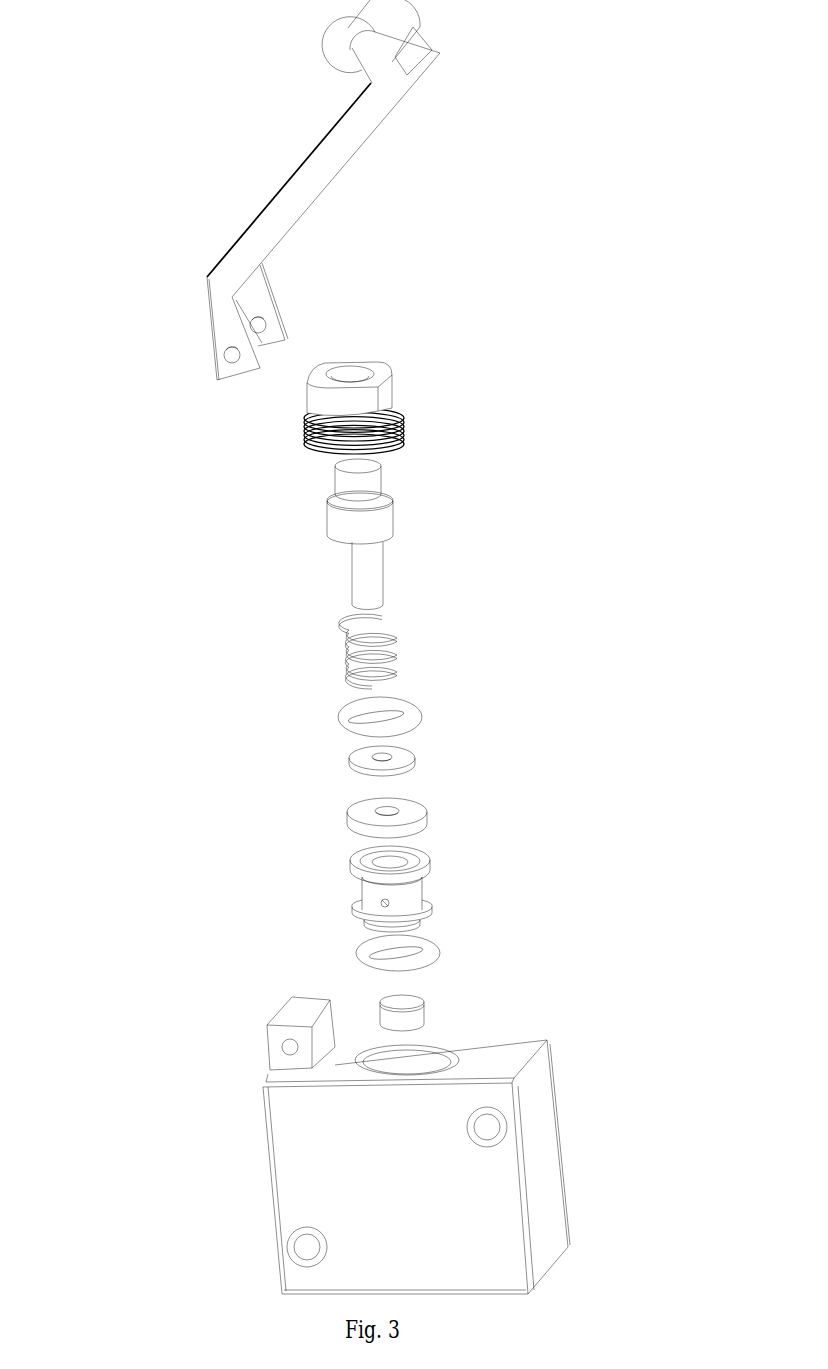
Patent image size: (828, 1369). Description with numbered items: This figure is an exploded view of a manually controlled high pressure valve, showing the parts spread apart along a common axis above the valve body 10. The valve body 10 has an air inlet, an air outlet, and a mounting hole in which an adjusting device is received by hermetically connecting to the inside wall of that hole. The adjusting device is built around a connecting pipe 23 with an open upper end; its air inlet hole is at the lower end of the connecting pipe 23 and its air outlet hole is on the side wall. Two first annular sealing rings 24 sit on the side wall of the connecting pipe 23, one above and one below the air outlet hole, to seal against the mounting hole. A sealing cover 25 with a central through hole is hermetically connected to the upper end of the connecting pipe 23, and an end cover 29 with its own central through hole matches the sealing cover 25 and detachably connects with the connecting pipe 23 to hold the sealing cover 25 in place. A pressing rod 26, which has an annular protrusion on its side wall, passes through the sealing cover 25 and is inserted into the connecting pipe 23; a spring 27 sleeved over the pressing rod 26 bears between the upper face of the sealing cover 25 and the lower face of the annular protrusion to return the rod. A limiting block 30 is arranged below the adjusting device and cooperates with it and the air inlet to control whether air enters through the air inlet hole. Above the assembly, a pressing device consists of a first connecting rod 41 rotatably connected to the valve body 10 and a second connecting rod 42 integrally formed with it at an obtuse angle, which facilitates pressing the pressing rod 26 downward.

The valve body 10 is at (502, 1210).
The connecting pipe 23 is at (425, 890).
The first annular sealing ring 24 is at (442, 950).
The sealing cover 25 is at (415, 758).
The pressing rod 26 is at (395, 508).
The spring 27 is at (395, 640).
The end cover 29 is at (395, 385).
The limiting block 30 is at (420, 1013).
The first connecting rod 41 is at (210, 327).
The second connecting rod 42 is at (288, 178).